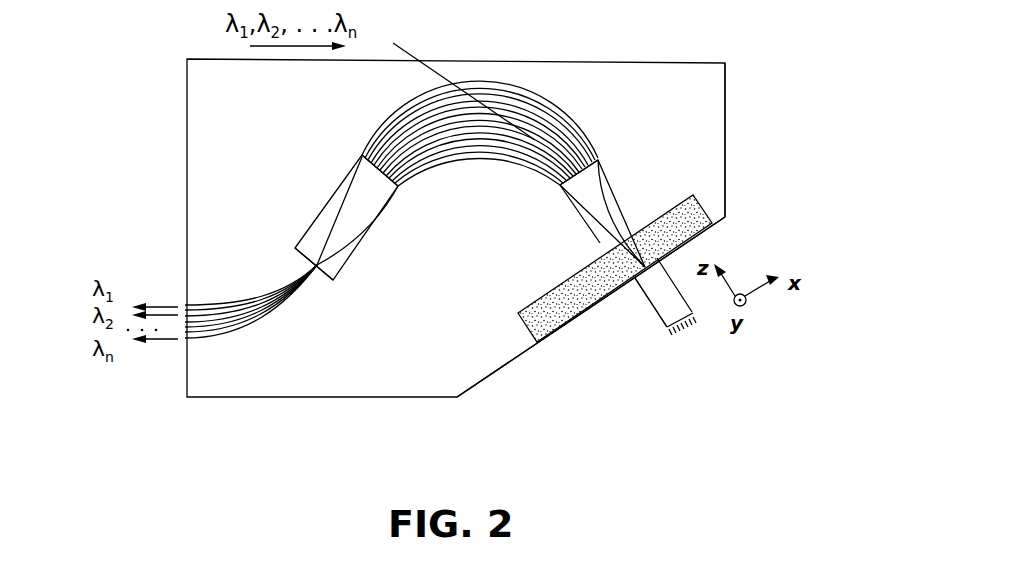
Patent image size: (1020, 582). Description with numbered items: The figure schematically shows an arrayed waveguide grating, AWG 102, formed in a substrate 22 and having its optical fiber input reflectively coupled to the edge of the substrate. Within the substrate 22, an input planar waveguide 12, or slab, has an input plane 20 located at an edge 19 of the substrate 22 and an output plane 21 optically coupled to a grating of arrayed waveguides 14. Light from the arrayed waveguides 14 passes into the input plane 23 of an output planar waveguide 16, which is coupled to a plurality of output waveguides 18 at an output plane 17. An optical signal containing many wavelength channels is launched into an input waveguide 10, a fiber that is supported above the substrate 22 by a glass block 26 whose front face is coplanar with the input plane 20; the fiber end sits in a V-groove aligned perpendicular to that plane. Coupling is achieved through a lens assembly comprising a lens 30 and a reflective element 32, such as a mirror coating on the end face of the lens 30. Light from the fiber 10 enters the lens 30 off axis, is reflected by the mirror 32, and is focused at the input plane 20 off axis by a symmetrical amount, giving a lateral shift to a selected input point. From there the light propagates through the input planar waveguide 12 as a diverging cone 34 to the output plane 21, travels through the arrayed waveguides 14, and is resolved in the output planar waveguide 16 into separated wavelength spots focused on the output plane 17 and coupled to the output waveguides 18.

The input waveguide 10 is at (407, 48).
The input planar waveguide 12 is at (625, 188).
The arrayed waveguides 14 is at (486, 164).
The output planar waveguide 16 is at (347, 250).
The output plane 17 is at (298, 260).
The output waveguides 18 is at (252, 327).
The edge of the substrate 19 is at (493, 377).
The input plane 20 is at (700, 238).
The output plane 21 is at (598, 160).
The substrate 22 is at (692, 108).
The input plane 23 is at (362, 157).
The glass block 26 is at (697, 206).
The lens 30 is at (643, 293).
The reflective element 32 is at (667, 328).
The diverging cone 34 is at (578, 195).
The AWG 102 is at (746, 117).